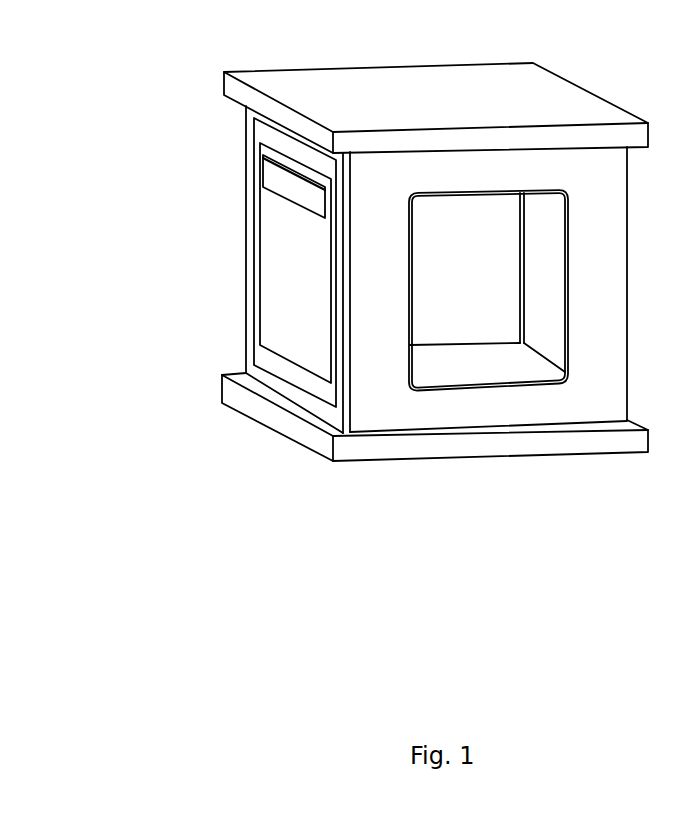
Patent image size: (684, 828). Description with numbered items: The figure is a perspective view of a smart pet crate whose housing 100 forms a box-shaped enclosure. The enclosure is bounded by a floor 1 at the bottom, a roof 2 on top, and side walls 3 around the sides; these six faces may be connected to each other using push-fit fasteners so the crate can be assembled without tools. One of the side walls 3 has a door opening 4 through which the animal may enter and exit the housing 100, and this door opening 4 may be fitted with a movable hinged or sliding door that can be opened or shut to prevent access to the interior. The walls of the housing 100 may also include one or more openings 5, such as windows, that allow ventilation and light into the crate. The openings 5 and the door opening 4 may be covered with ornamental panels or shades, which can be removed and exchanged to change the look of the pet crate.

The housing 100 is at (160, 38).
The floor 1 is at (492, 362).
The roof 2 is at (473, 98).
The side walls 3 is at (583, 172).
The door opening 4 is at (579, 249).
The openings 5 is at (262, 166).